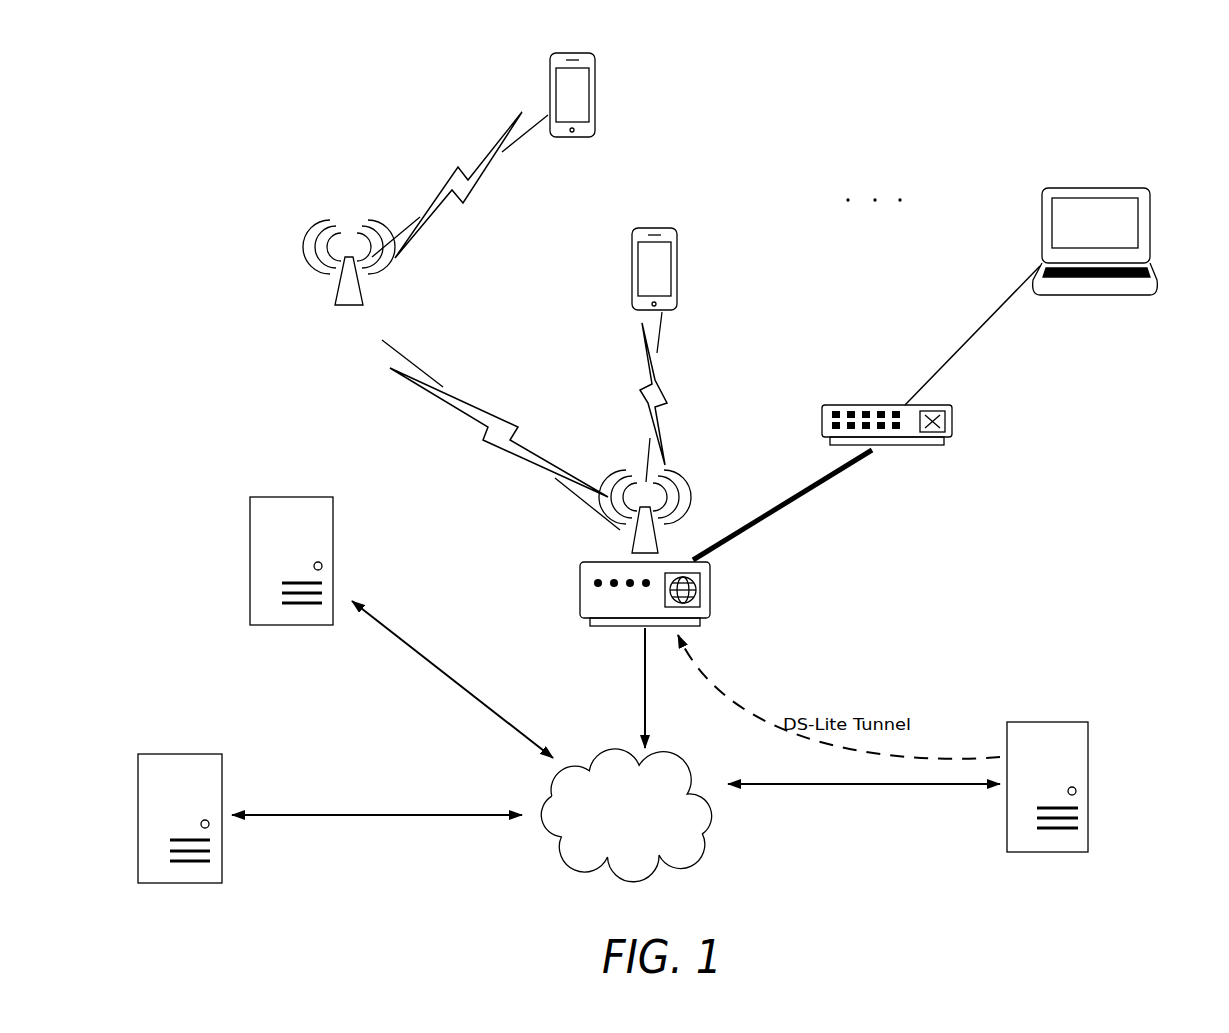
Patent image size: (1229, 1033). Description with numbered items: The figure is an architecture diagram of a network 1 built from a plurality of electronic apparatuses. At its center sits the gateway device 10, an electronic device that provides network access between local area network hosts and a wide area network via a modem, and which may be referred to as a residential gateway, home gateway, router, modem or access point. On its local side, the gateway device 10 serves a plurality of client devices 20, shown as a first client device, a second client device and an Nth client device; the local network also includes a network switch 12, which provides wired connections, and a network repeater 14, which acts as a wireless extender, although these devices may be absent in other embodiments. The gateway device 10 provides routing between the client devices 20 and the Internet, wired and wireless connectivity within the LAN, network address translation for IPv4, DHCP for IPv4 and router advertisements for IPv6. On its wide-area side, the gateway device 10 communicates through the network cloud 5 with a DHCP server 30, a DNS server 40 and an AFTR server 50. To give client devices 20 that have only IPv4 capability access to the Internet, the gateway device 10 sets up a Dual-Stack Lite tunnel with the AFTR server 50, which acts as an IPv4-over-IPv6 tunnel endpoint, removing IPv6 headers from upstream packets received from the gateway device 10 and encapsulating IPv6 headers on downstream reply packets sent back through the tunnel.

The network 1 is at (200, 88).
The network cloud 5 is at (698, 845).
The gateway device 10 is at (713, 577).
The network switch 12 is at (952, 427).
The network repeater 14 is at (322, 243).
The client devices 20 is at (596, 92).
The DHCP server 30 is at (332, 497).
The DNS server 40 is at (190, 753).
The AFTR server 50 is at (1087, 722).